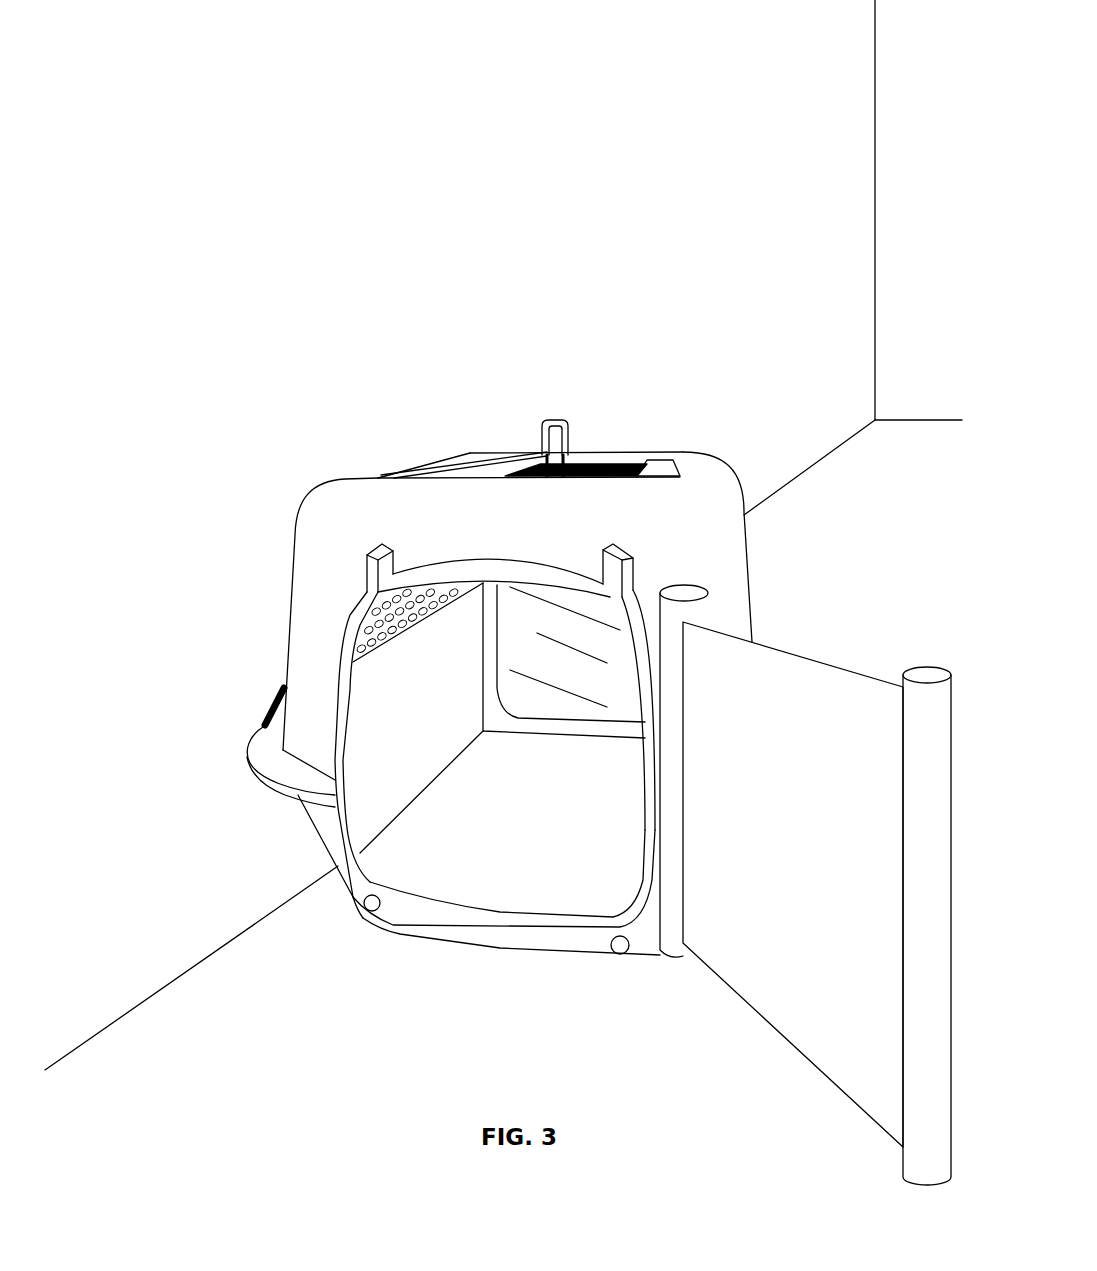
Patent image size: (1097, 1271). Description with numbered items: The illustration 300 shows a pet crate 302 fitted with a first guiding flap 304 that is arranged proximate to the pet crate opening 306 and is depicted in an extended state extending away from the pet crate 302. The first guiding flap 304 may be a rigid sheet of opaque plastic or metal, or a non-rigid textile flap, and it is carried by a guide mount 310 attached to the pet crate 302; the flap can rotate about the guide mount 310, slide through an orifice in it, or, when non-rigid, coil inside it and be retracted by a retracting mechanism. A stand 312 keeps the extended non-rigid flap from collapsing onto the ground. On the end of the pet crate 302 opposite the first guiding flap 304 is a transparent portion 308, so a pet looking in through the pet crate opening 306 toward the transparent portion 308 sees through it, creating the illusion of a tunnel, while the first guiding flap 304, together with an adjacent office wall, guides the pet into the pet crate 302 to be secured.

The illustration 300 is at (190, 69).
The pet crate 302 is at (377, 478).
The first guiding flap 304 is at (798, 656).
The pet crate opening 306 is at (367, 633).
The transparent portion 308 is at (530, 612).
The guide mount 310 is at (683, 585).
The stand 312 is at (927, 667).